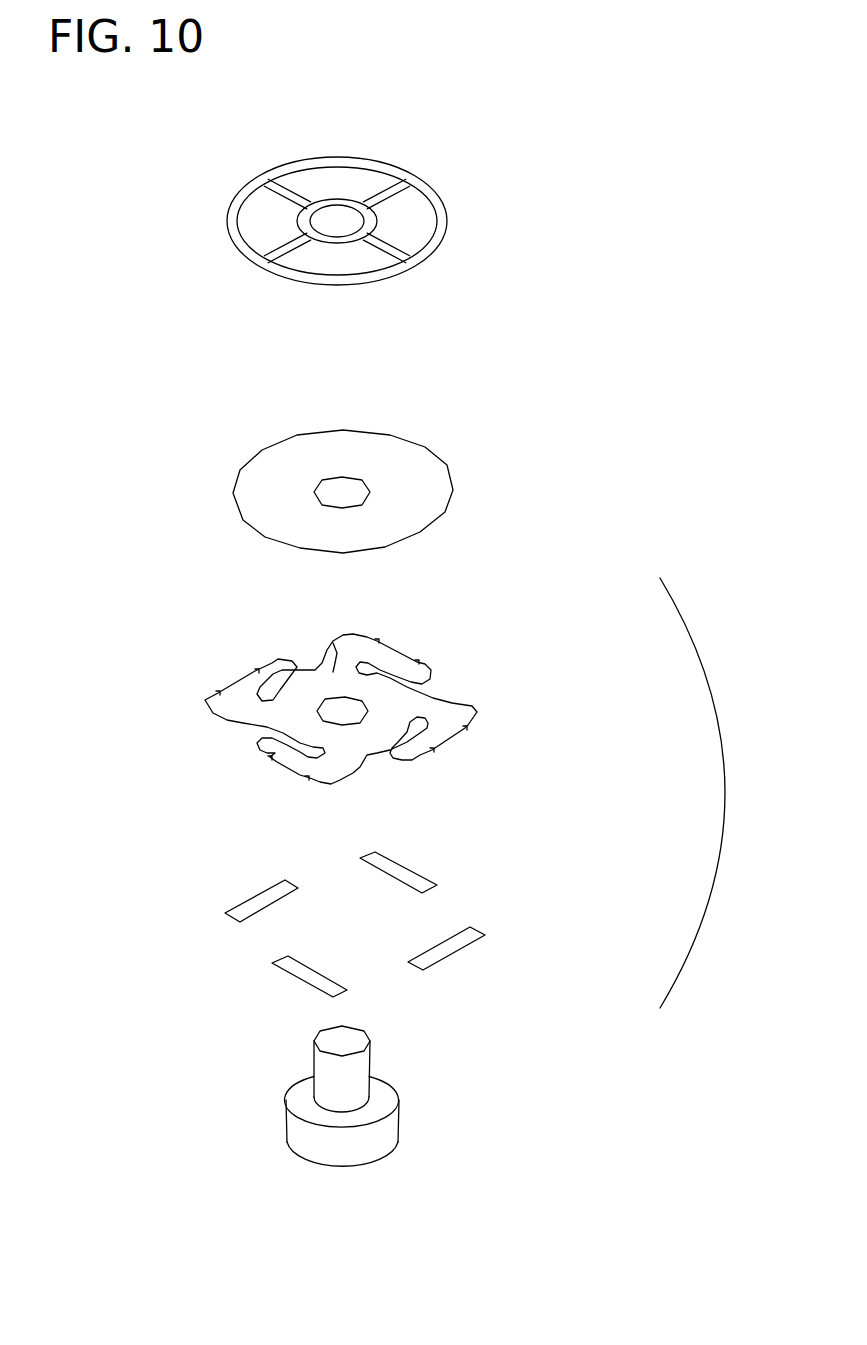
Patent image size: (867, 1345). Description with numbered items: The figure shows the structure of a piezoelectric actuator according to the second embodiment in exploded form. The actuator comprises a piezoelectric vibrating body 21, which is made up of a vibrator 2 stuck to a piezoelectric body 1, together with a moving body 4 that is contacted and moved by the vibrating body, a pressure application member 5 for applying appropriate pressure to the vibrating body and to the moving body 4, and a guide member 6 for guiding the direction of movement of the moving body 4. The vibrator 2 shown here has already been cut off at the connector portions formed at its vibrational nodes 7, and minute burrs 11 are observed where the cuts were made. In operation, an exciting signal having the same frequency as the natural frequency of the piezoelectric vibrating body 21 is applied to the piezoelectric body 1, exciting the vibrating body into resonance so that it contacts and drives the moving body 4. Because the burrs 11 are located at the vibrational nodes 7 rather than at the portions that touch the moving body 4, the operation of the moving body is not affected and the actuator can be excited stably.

The piezoelectric body 1 is at (243, 910).
The vibrator 2 is at (327, 643).
The moving body 4 is at (405, 472).
The pressure application member 5 is at (428, 193).
The guide member 6 is at (355, 1150).
The vibrational node 7 is at (268, 678).
The burr 11 is at (220, 693).
The piezoelectric vibrating body 21 is at (724, 793).